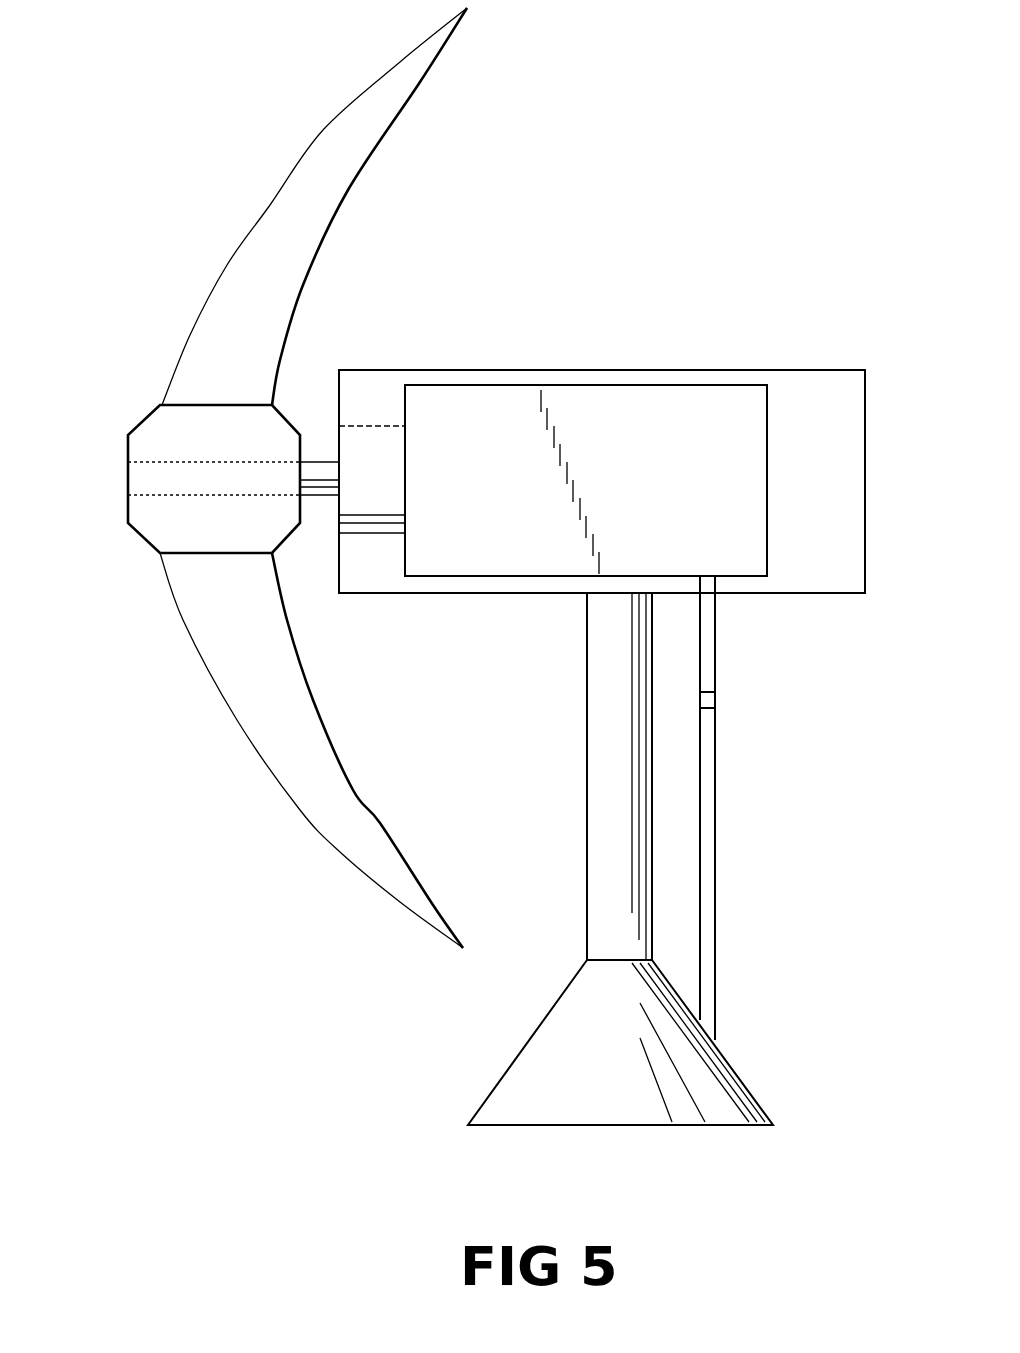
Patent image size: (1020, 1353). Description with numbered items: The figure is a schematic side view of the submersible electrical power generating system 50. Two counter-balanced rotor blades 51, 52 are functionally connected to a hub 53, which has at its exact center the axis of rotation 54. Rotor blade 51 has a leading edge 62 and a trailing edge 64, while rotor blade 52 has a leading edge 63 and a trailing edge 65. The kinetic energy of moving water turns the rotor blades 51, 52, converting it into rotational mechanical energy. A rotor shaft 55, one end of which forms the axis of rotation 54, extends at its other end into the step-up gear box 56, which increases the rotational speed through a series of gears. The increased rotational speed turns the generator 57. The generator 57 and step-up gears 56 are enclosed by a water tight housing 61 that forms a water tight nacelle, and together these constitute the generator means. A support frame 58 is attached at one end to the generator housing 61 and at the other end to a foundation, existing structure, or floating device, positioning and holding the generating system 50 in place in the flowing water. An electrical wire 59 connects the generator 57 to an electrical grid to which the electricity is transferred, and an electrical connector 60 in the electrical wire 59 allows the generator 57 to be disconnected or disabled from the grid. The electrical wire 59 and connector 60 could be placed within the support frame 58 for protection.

The electrical power generating system 50 is at (830, 508).
The rotor blade 51 is at (288, 206).
The rotor blade 52 is at (303, 750).
The hub 53 is at (173, 524).
The axis of rotation 54 is at (153, 478).
The rotor shaft 55 is at (318, 472).
The step-up gear box 56 is at (378, 455).
The generator 57 is at (650, 418).
The support frame 58 is at (620, 675).
The electrical wire 59 is at (715, 960).
The electrical connector 60 is at (715, 700).
The water tight housing 61 is at (865, 485).
The leading edge 62 is at (323, 130).
The leading edge 63 is at (340, 852).
The trailing edge 64 is at (348, 190).
The trailing edge 65 is at (380, 823).